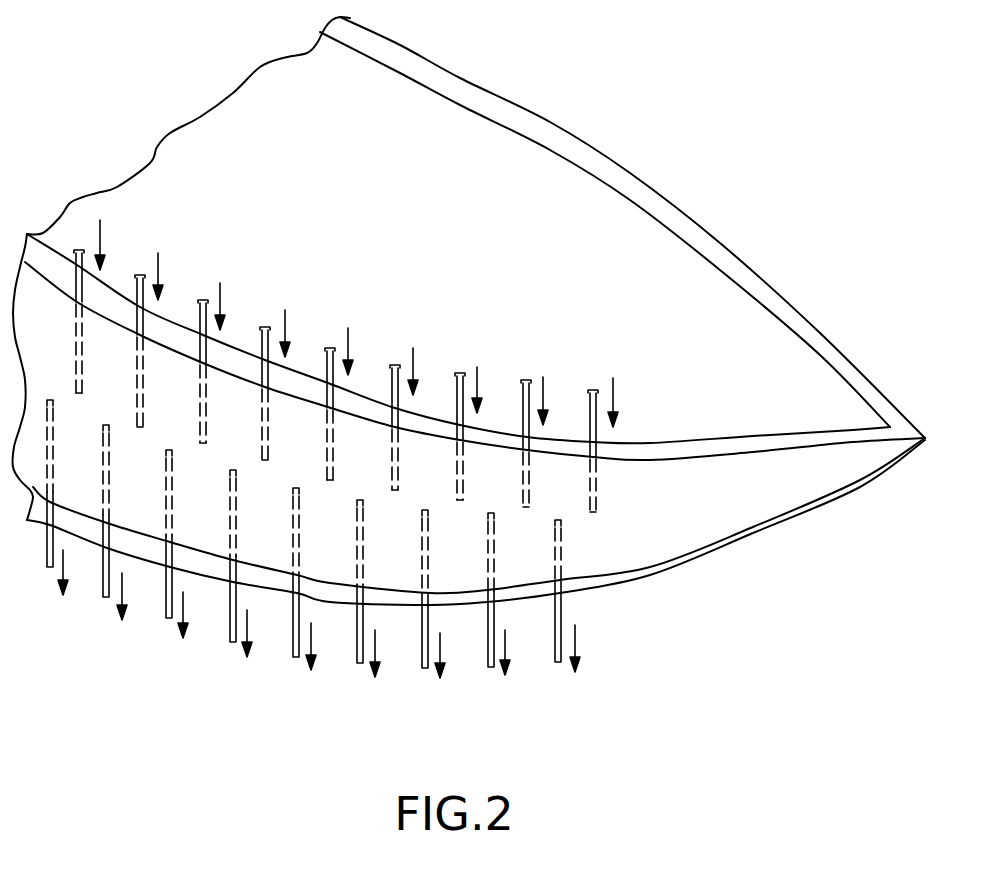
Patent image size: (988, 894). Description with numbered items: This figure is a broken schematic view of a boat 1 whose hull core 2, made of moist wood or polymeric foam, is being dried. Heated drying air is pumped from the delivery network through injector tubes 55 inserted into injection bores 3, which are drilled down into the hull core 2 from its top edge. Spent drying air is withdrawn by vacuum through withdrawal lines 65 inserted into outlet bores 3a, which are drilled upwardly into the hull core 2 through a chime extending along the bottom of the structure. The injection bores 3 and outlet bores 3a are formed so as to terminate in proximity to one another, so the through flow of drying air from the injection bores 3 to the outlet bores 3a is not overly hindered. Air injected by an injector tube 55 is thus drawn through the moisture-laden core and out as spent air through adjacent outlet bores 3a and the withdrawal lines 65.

The boat 1 is at (787, 228).
The hull core 2 is at (704, 462).
The injection bores 3 is at (452, 474).
The outlet bores 3a is at (431, 556).
The injector tubes 55 is at (72, 220).
The withdrawal lines 65 is at (622, 677).